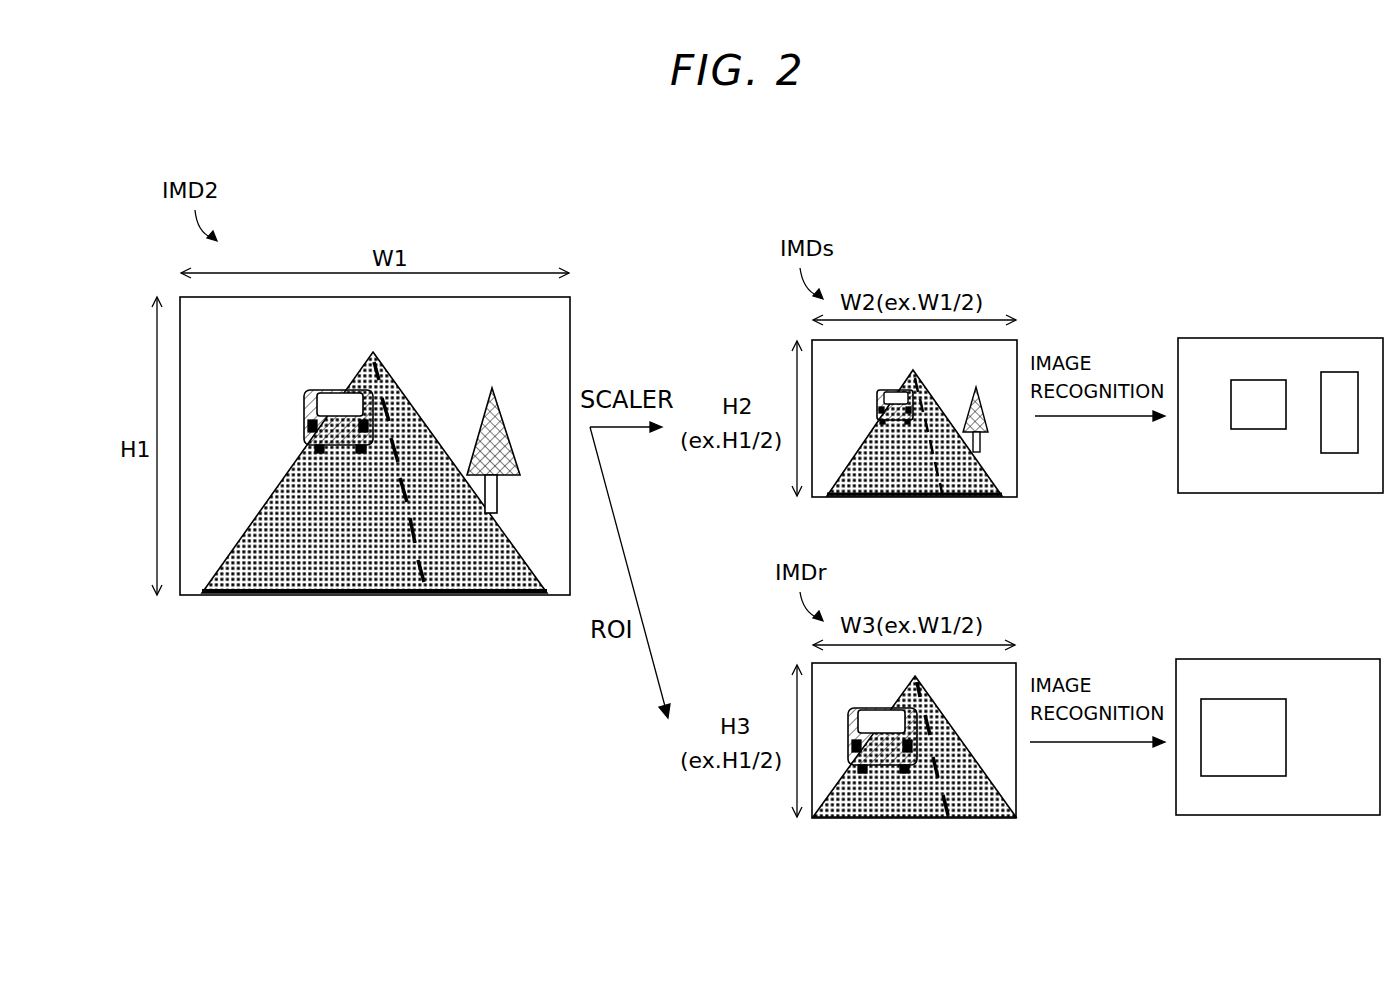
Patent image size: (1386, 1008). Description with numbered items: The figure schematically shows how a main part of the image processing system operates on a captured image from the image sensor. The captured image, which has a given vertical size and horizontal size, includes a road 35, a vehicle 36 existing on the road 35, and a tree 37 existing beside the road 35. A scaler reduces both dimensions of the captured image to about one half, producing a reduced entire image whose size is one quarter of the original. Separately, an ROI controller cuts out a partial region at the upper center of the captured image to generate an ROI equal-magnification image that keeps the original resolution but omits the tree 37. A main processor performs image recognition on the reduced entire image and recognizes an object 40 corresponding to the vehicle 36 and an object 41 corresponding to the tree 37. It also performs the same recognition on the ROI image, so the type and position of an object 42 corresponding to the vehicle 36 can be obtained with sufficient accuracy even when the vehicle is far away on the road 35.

The road 35 is at (255, 570).
The vehicle 36 is at (333, 450).
The tree 37 is at (503, 477).
The object 40 is at (1260, 378).
The object 41 is at (1340, 372).
The object 42 is at (1240, 699).